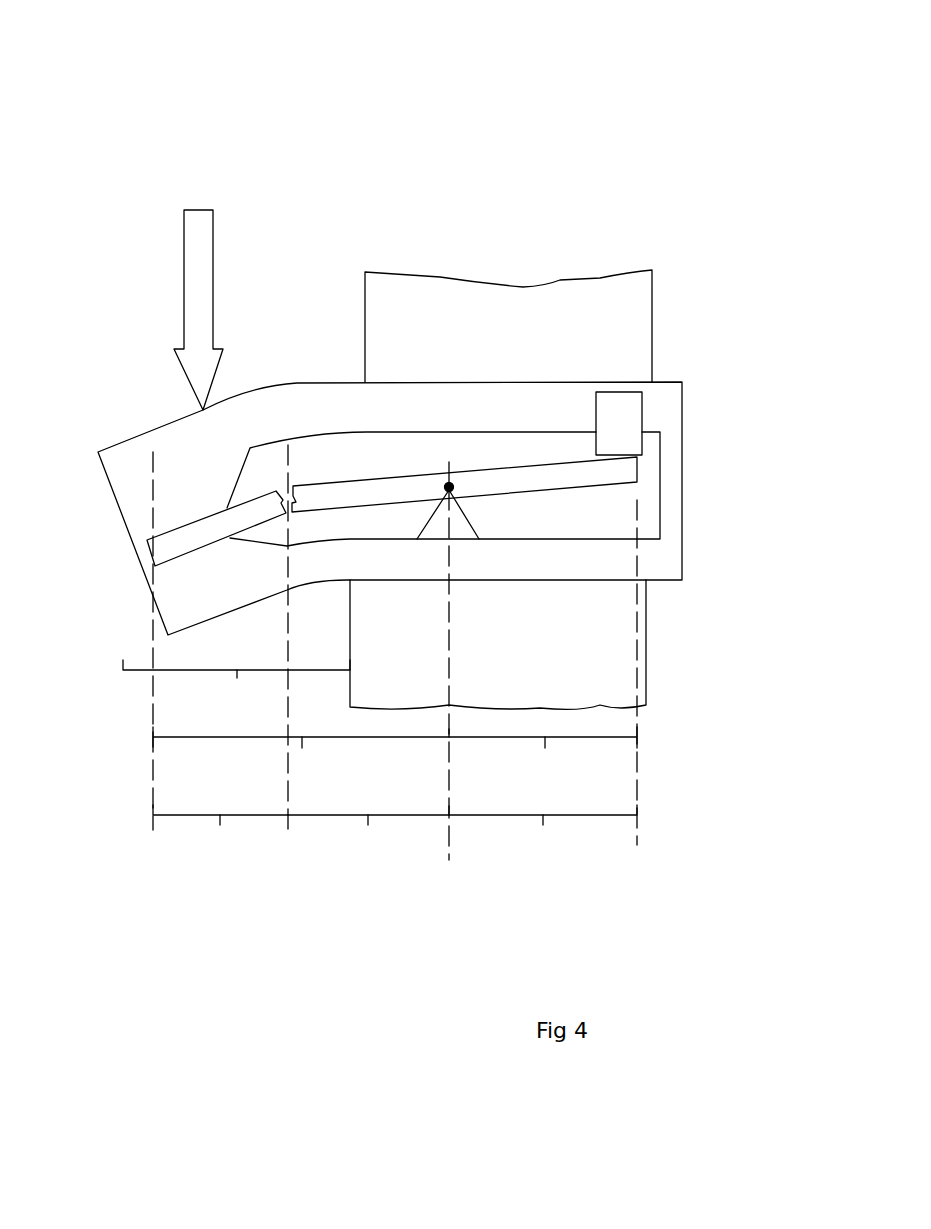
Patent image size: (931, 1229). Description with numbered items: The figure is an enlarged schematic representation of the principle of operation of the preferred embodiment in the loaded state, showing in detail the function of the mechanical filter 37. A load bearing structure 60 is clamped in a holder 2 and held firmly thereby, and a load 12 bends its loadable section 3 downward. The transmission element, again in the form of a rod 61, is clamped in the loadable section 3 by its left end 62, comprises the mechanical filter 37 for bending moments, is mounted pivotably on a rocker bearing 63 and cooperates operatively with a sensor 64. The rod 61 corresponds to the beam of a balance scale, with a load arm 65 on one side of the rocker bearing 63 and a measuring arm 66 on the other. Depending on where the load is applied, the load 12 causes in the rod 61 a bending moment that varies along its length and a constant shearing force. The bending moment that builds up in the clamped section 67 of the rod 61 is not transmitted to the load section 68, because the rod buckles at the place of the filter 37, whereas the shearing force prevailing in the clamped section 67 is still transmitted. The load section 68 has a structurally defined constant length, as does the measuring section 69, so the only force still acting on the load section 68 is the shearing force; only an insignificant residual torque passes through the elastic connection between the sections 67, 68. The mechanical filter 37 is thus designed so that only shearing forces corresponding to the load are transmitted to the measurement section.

The load bearing structure 60 is at (290, 140).
The load 12 is at (197, 298).
The rod 61 is at (380, 457).
The left end 62 is at (188, 540).
The mechanical filter 37 is at (282, 466).
The rocker bearing 63 is at (448, 518).
The sensor 64 is at (618, 421).
The holder 2 is at (632, 323).
The loadable section 3 is at (236, 689).
The load arm 65 is at (301, 756).
The measuring arm 66 is at (543, 754).
The clamped section 67 is at (220, 835).
The load section 68 is at (368, 836).
The measuring section 69 is at (543, 836).